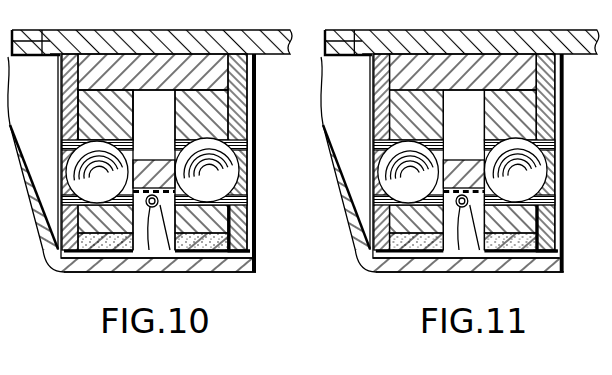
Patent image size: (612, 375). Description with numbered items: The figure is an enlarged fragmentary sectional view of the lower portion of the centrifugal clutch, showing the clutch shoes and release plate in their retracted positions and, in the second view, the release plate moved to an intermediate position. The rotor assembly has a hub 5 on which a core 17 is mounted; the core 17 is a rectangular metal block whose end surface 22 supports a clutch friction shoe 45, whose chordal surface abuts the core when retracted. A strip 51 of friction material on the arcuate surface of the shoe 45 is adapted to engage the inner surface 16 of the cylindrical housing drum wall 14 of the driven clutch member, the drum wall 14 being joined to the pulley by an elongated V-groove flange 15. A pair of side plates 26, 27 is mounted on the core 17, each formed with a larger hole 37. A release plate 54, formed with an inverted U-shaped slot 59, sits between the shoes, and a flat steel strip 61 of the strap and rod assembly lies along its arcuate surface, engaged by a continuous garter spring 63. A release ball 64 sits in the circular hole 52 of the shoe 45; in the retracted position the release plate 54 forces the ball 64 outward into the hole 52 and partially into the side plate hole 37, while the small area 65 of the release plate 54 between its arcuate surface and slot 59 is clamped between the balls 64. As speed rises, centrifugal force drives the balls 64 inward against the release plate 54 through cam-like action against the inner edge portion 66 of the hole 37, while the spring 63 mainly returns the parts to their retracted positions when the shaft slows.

In FIG. 10, the hub 5 is at (154, 36).
In FIG. 11, the hub 5 is at (462, 28).
In FIG. 10, the cylindrical housing drum wall 14 is at (210, 268).
In FIG. 11, the cylindrical housing drum wall 14 is at (473, 184).
In FIG. 11, the elongated V-groove flange 15 is at (343, 155).
In FIG. 10, the inner surface of housing wall 16 is at (80, 263).
In FIG. 11, the inner surface of housing wall 16 is at (468, 280).
In FIG. 10, the core 17 is at (140, 66).
In FIG. 11, the core 17 is at (463, 45).
In FIG. 10, the end surface of core 22 is at (201, 97).
In FIG. 10, the side plate 26 is at (65, 243).
In FIG. 11, the side plate 26 is at (360, 152).
In FIG. 10, the side plate 27 is at (236, 231).
In FIG. 11, the side plate 27 is at (572, 152).
In FIG. 10, the hole in side plate 37 is at (249, 133).
In FIG. 11, the hole in side plate 37 is at (473, 152).
In FIG. 10, the clutch friction shoe 45 is at (90, 107).
In FIG. 10, the strip of friction material 51 is at (234, 262).
In FIG. 10, the circular hole in clutch shoe 52 is at (200, 127).
In FIG. 11, the circular hole in clutch shoe 52 is at (468, 115).
In FIG. 10, the release plate 54 is at (143, 170).
In FIG. 11, the release plate 54 is at (487, 252).
In FIG. 11, the inverted U-shaped slot 59 is at (463, 150).
In FIG. 10, the flat steel strip 61 is at (175, 232).
In FIG. 10, the garter spring 63 is at (157, 232).
In FIG. 10, the release ball 64 is at (223, 163).
In FIG. 11, the release ball 64 is at (493, 169).
In FIG. 11, the area of release plate 65 is at (443, 252).
In FIG. 10, the inner edge portion of side plate hole 66 is at (230, 205).
In FIG. 11, the inner edge portion of side plate hole 66 is at (443, 209).